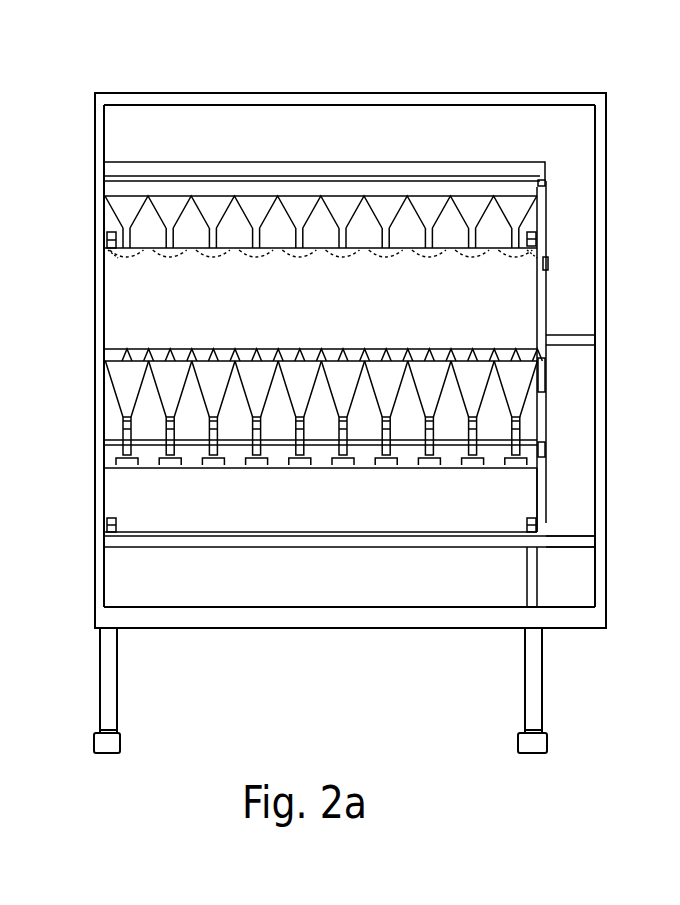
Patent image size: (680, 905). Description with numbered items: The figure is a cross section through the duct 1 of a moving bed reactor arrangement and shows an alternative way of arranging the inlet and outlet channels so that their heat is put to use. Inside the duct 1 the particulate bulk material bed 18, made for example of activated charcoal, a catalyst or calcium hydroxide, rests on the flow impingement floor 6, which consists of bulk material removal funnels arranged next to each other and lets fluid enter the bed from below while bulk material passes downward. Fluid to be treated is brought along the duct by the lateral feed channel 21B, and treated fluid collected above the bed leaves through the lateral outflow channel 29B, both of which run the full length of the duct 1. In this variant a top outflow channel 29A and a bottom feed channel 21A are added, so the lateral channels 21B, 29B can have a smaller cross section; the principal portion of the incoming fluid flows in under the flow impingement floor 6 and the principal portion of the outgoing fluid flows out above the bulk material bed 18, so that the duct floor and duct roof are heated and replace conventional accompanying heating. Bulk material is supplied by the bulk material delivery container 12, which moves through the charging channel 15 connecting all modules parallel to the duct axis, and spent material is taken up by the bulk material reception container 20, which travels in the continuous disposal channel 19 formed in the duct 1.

The duct 1 is at (604, 177).
The top outflow channel 29A is at (312, 153).
The charging channel 15 is at (120, 190).
The bulk material delivery container 12 is at (117, 217).
The outflow channel 29B is at (573, 256).
The flow impingement floor 6 is at (289, 377).
The bulk material bed 18 is at (292, 317).
The bulk material reception container 20 is at (125, 502).
The disposal channel 19 is at (157, 537).
The bottom feed channel 21A is at (310, 592).
The lateral feed channel 21B is at (572, 531).